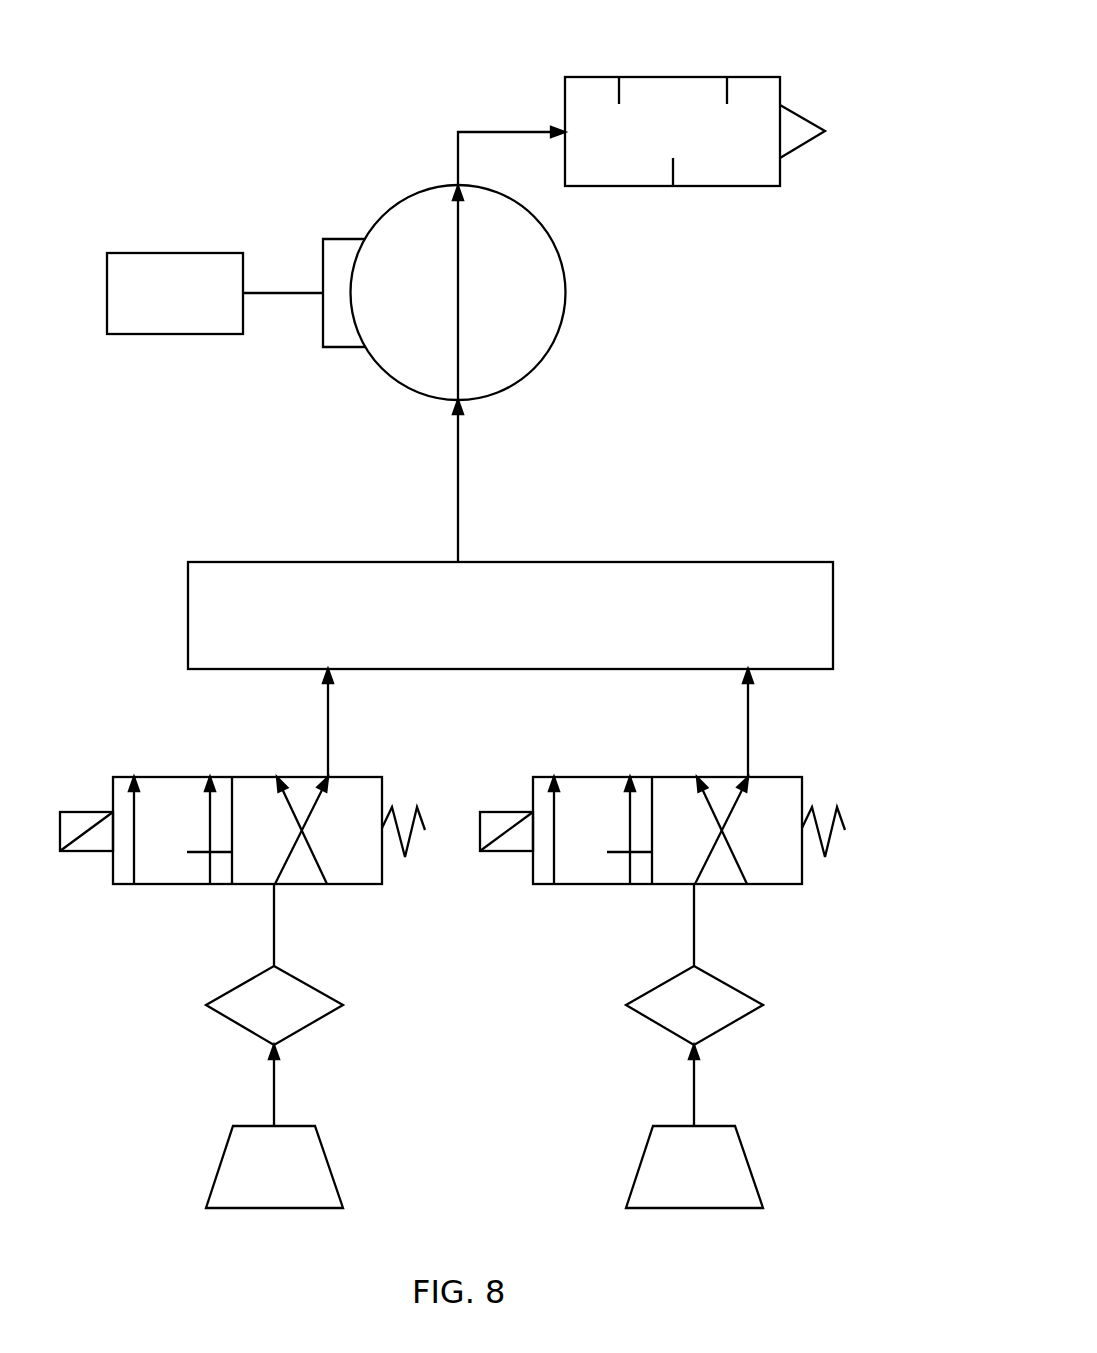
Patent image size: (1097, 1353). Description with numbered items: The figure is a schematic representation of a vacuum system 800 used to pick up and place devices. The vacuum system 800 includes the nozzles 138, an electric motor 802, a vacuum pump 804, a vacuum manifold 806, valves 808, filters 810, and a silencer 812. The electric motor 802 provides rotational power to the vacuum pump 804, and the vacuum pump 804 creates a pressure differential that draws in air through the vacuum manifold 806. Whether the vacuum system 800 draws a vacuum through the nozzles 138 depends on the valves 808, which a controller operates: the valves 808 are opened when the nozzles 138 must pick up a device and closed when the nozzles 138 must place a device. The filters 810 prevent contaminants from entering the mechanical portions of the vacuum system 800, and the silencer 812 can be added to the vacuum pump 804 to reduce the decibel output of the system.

The vacuum system 800 is at (210, 78).
The electric motor 802 is at (155, 306).
The vacuum pump 804 is at (483, 306).
The vacuum manifold 806 is at (490, 627).
The valves 808 is at (173, 828).
The filters 810 is at (254, 1019).
The silencer 812 is at (653, 143).
The nozzles 138 is at (254, 1181).